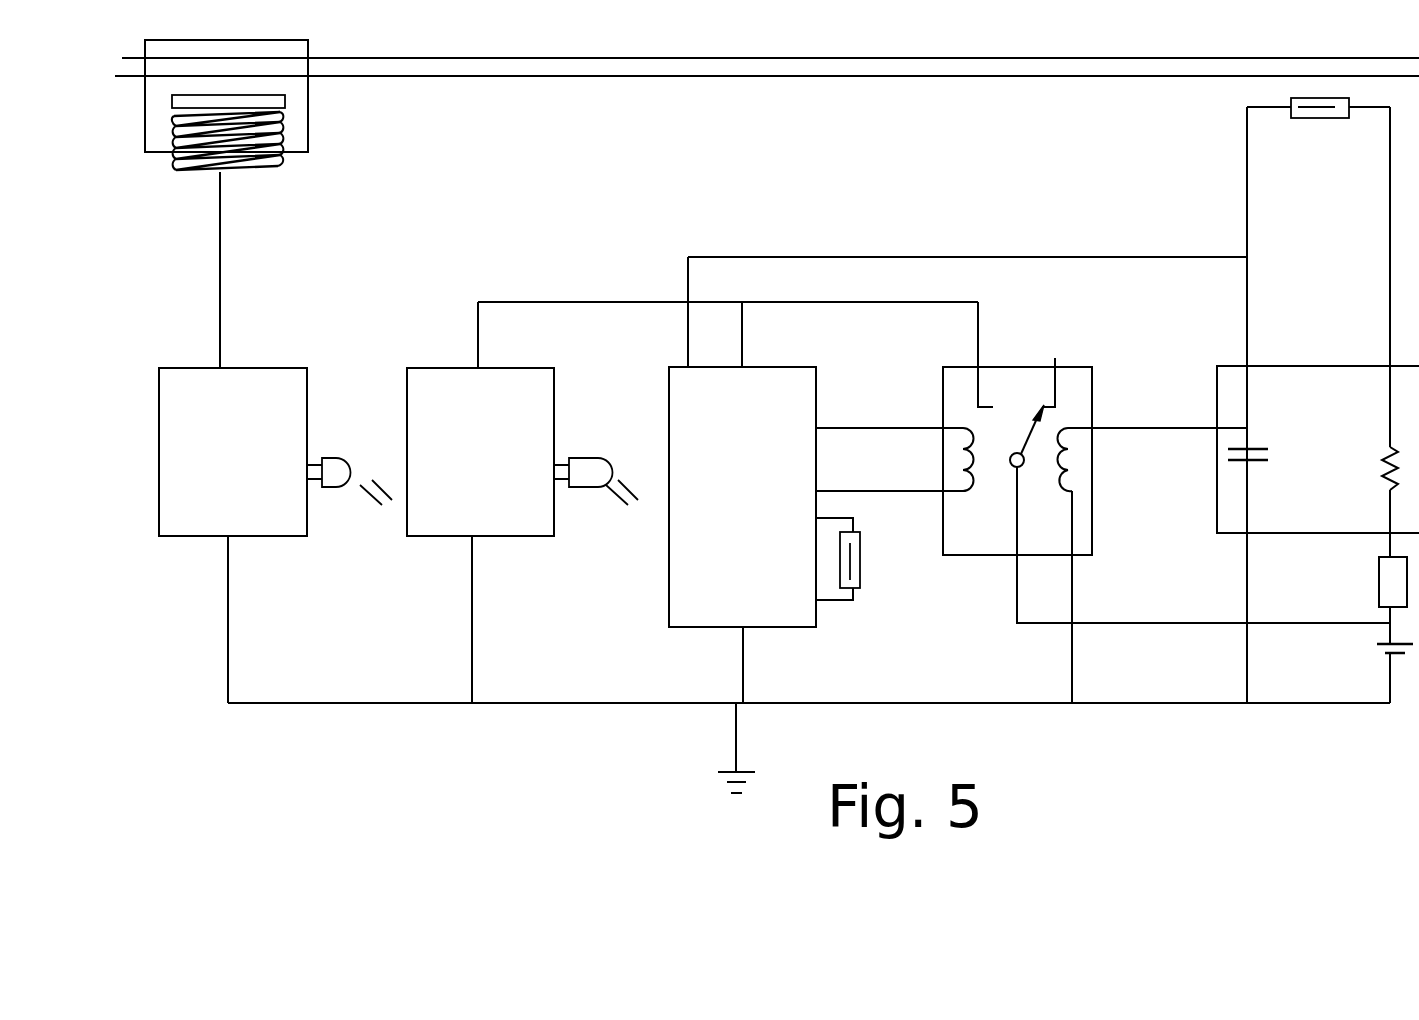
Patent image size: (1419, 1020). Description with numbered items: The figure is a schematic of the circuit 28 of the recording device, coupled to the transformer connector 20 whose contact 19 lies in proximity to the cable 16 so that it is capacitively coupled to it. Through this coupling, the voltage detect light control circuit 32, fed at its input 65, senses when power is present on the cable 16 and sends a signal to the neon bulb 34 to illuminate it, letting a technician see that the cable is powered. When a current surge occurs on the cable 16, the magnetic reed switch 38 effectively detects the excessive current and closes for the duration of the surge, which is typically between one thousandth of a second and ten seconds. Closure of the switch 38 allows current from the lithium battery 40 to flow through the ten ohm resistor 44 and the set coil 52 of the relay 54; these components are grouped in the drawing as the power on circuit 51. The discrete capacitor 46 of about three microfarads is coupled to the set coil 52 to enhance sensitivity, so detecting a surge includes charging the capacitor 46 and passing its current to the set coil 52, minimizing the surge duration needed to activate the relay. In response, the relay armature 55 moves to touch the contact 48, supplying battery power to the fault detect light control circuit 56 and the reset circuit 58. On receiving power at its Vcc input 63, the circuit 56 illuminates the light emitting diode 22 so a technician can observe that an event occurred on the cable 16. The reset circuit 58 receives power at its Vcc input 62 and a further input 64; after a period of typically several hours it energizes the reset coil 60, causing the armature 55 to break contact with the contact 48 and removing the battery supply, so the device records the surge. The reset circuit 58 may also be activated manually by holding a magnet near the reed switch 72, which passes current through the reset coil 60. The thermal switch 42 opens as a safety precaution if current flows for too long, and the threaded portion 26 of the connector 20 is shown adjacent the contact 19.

The cable 16 is at (520, 77).
The contact 19 is at (285, 98).
The transformer connector 20 is at (308, 133).
The threaded spring 26 is at (262, 159).
The voltage detect input wire 65 is at (223, 283).
The voltage detect light control circuit 32 is at (233, 535).
The neon bulb 34 is at (340, 462).
The Vcc input 63 is at (480, 348).
The fault detect light control circuit 56 is at (480, 535).
The light emitting diode 22 is at (585, 460).
The reset circuit input line 64 is at (963, 326).
The Vcc input 62 is at (728, 348).
The reset circuit 58 is at (742, 535).
The reed switch 72 is at (862, 543).
The reset coil 60 is at (962, 452).
The relay 54 is at (1017, 461).
The contact 48 is at (989, 406).
The relay armature 55 is at (1028, 433).
The set coil 52 is at (1072, 456).
The magnetic reed switch 38 is at (1308, 118).
The power on circuit 51 is at (823, 405).
The capacitor 46 is at (1262, 446).
The resistor 44 is at (1385, 455).
The thermal switch 42 is at (1378, 572).
The lithium battery 40 is at (1377, 640).
The circuit 28 is at (807, 719).